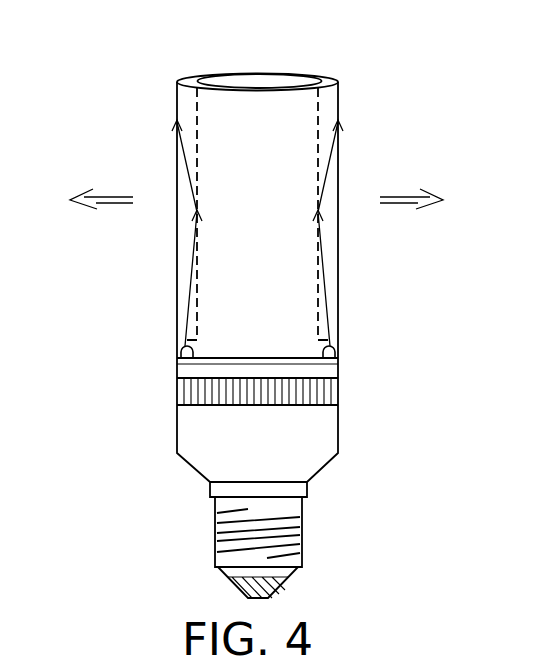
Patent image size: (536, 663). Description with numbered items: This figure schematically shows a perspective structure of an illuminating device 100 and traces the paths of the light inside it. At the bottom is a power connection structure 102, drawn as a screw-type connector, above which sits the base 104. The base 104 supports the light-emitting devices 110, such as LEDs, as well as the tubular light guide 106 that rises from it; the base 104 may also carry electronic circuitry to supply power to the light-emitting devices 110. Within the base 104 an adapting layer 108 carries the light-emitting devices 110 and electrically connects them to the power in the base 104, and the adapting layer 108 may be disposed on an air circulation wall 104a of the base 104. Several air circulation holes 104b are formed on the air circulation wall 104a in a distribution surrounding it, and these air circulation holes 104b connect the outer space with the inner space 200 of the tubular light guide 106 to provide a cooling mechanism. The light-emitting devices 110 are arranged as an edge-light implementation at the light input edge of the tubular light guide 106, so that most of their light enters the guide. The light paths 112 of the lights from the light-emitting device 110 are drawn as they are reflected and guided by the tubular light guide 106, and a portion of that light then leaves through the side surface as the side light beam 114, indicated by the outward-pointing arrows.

The illuminating device 100 is at (388, 68).
The power connection structure 102 is at (296, 533).
The base 104 is at (294, 420).
The air circulation wall 104a is at (340, 361).
The air circulation hole 104b is at (337, 398).
The tubular light guide 106 is at (338, 240).
The adapting layer 108 is at (333, 356).
The light-emitting device 110 is at (183, 352).
The light path 112 is at (325, 298).
The side light beam 114 is at (107, 196).
The inner space 200 is at (248, 130).